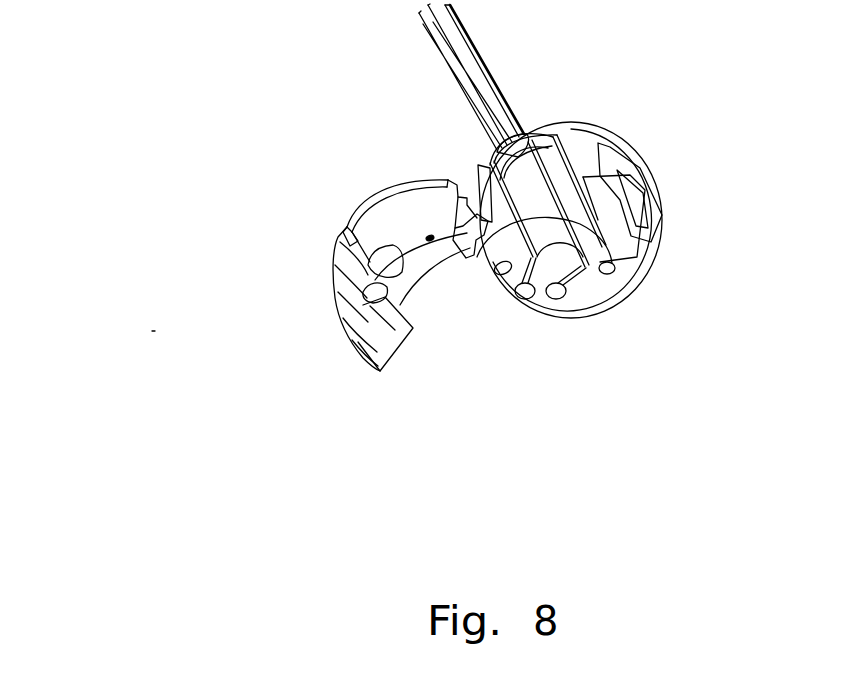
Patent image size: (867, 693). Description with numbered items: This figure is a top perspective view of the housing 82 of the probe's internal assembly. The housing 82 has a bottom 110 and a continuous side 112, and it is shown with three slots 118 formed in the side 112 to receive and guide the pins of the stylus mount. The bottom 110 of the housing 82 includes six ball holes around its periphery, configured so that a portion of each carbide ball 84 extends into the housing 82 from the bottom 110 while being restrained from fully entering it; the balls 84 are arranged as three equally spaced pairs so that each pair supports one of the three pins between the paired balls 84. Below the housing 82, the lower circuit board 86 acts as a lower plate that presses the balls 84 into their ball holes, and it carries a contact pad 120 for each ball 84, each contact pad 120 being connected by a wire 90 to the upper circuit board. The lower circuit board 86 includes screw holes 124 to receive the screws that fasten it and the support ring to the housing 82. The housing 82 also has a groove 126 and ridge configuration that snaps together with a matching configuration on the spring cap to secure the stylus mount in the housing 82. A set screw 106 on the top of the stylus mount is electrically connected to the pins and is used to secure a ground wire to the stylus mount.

The housing 82 is at (300, 290).
The carbide balls 84 is at (503, 227).
The lower circuit board 86 is at (600, 297).
The wires 90 is at (497, 88).
The set screw 106 is at (425, 177).
The bottom 110 is at (383, 362).
The continuous side 112 is at (402, 207).
The slots 118 is at (637, 170).
The contact pad 120 is at (556, 298).
The screw holes 124 is at (612, 272).
The groove 126 is at (400, 304).